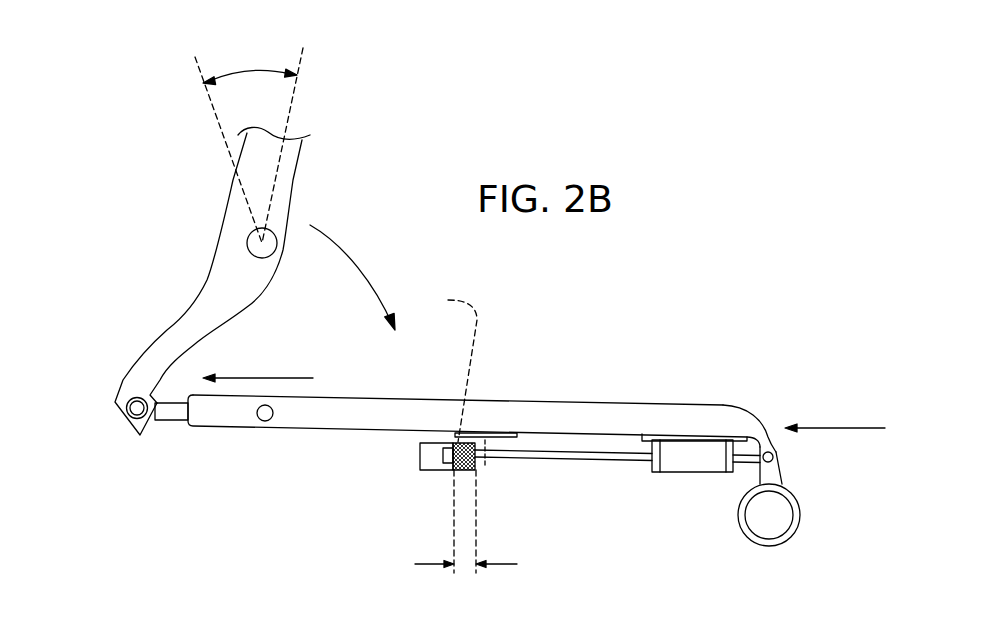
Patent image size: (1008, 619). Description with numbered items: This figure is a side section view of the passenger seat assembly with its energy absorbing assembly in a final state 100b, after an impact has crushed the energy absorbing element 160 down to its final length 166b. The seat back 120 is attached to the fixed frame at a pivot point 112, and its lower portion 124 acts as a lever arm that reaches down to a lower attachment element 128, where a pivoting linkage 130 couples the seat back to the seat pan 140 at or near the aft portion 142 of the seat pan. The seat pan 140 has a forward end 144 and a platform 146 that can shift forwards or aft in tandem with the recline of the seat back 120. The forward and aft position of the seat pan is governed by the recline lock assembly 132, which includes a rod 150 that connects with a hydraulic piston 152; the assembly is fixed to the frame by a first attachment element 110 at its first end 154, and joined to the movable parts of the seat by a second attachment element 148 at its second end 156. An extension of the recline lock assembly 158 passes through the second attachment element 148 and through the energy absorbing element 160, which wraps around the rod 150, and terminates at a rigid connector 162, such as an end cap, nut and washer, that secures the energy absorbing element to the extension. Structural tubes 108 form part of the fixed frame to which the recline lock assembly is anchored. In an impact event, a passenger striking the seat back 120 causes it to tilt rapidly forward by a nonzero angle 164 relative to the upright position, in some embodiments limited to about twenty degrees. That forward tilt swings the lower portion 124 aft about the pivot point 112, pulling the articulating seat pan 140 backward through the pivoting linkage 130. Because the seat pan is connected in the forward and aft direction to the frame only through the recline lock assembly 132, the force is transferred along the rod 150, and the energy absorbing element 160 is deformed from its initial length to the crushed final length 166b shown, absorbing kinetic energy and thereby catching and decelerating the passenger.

The final state 100b is at (769, 283).
The structural tubes 108 is at (798, 523).
The first attachment element 110 is at (782, 477).
The pivot point 112 is at (247, 243).
The seat back 120 is at (299, 213).
The lower portion 124 is at (167, 328).
The lower attachment element 128 is at (123, 418).
The pivoting linkage 130 is at (170, 431).
The recline lock assembly 132 is at (613, 478).
The seat pan 140 is at (661, 316).
The aft portion 142 is at (225, 415).
The forward end 144 is at (767, 427).
The platform 146 is at (556, 403).
The second attachment element 148 is at (494, 423).
The rod 150 is at (588, 455).
The hydraulic piston 152 is at (692, 443).
The first end 154 is at (778, 456).
The second end 156 is at (493, 442).
The extension of the recline lock assembly 158 is at (447, 365).
The energy absorbing element 160 is at (438, 443).
The rigid connector 162 is at (422, 442).
The nonzero angle 164 is at (252, 72).
The final length 166b is at (441, 524).